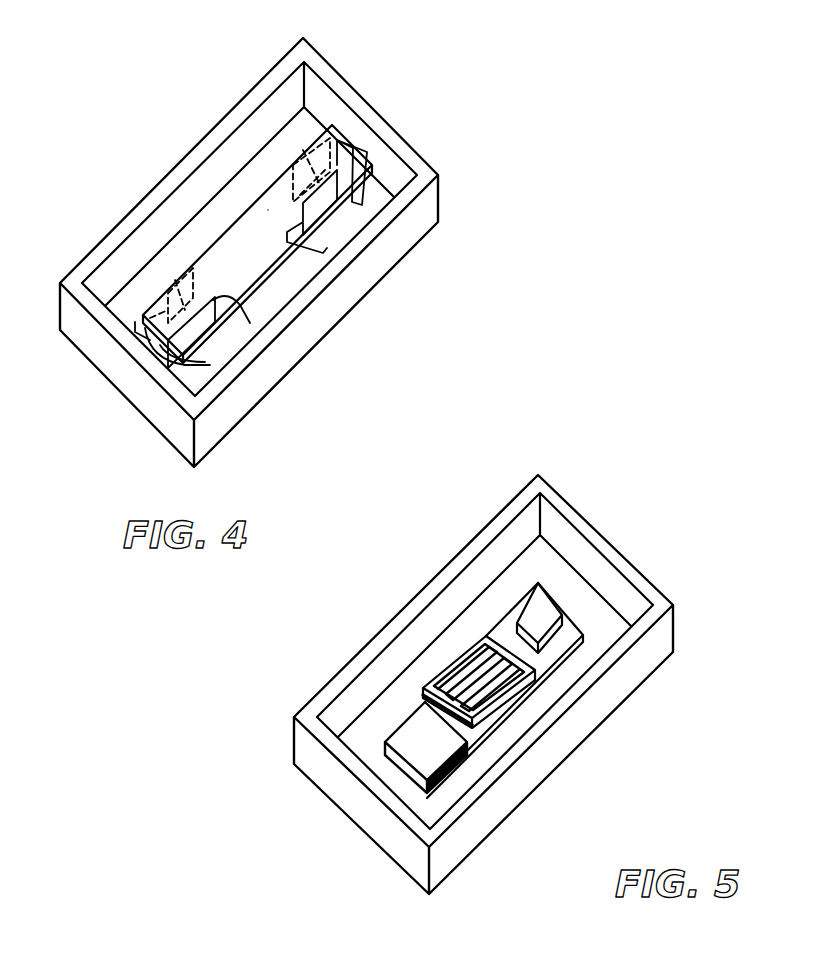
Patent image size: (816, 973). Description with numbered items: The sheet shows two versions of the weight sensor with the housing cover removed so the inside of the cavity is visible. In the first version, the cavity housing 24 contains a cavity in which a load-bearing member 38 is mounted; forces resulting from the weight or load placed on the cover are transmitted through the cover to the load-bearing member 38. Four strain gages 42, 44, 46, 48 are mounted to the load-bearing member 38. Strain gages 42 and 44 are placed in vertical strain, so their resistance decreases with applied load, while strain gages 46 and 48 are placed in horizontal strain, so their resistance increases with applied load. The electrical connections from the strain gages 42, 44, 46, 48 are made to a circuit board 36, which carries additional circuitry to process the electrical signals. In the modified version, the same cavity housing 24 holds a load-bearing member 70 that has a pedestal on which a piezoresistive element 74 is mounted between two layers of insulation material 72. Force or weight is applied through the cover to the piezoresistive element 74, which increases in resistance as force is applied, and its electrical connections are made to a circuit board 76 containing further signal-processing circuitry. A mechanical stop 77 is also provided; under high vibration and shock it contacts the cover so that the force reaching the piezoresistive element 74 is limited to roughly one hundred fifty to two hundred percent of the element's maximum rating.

In FIG. 4, the cavity housing 24 is at (215, 425).
In FIG. 5, the cavity housing 24 is at (442, 853).
In FIG. 4, the circuit board 36 is at (303, 277).
In FIG. 4, the load-bearing member 38 is at (268, 210).
In FIG. 4, the strain gage 42 is at (170, 292).
In FIG. 4, the strain gage 44 is at (305, 173).
In FIG. 4, the strain gage 46 is at (208, 322).
In FIG. 4, the strain gage 48 is at (355, 236).
In FIG. 5, the load-bearing member 70 is at (563, 643).
In FIG. 5, the insulation material 72 is at (530, 670).
In FIG. 5, the piezoresistive element 74 is at (507, 683).
In FIG. 5, the circuit board 76 is at (435, 748).
In FIG. 5, the mechanical stop 77 is at (540, 608).